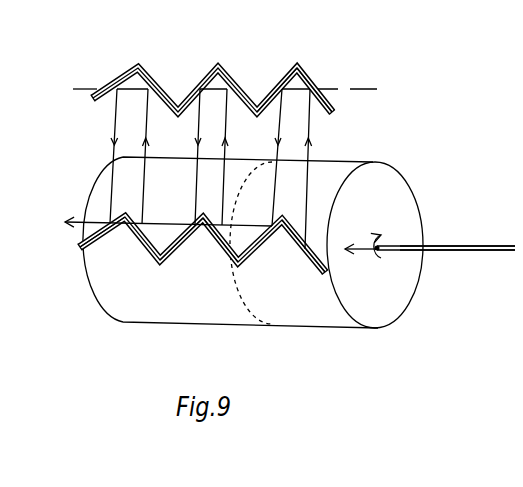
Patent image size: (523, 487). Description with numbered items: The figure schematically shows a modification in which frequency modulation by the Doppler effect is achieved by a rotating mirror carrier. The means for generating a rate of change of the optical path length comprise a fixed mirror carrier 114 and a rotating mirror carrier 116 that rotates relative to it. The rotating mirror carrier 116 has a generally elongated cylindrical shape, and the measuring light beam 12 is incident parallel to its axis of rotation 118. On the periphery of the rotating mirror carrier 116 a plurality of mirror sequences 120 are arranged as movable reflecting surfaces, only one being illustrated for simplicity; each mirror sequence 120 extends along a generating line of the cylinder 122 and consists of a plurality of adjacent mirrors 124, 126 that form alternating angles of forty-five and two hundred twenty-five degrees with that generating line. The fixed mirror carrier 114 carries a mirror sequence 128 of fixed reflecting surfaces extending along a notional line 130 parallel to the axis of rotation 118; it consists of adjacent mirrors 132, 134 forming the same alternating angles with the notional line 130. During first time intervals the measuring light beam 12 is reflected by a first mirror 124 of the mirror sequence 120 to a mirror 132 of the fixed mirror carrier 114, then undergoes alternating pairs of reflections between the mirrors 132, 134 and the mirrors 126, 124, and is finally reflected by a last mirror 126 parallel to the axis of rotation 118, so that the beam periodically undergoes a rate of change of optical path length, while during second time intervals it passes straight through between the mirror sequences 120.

The measuring light beam 12 is at (468, 253).
The fixed mirror carrier 114 is at (316, 79).
The rotating mirror carrier 116 is at (422, 183).
The axis of rotation 118 is at (493, 245).
The mirror sequence 120 is at (216, 247).
The cylinder 122 is at (147, 307).
The mirror 124 is at (193, 244).
The mirror 126 is at (84, 249).
The mirror sequence 128 is at (274, 84).
The notional line 130 is at (90, 88).
The mirror 132 is at (318, 90).
The mirror 134 is at (289, 71).